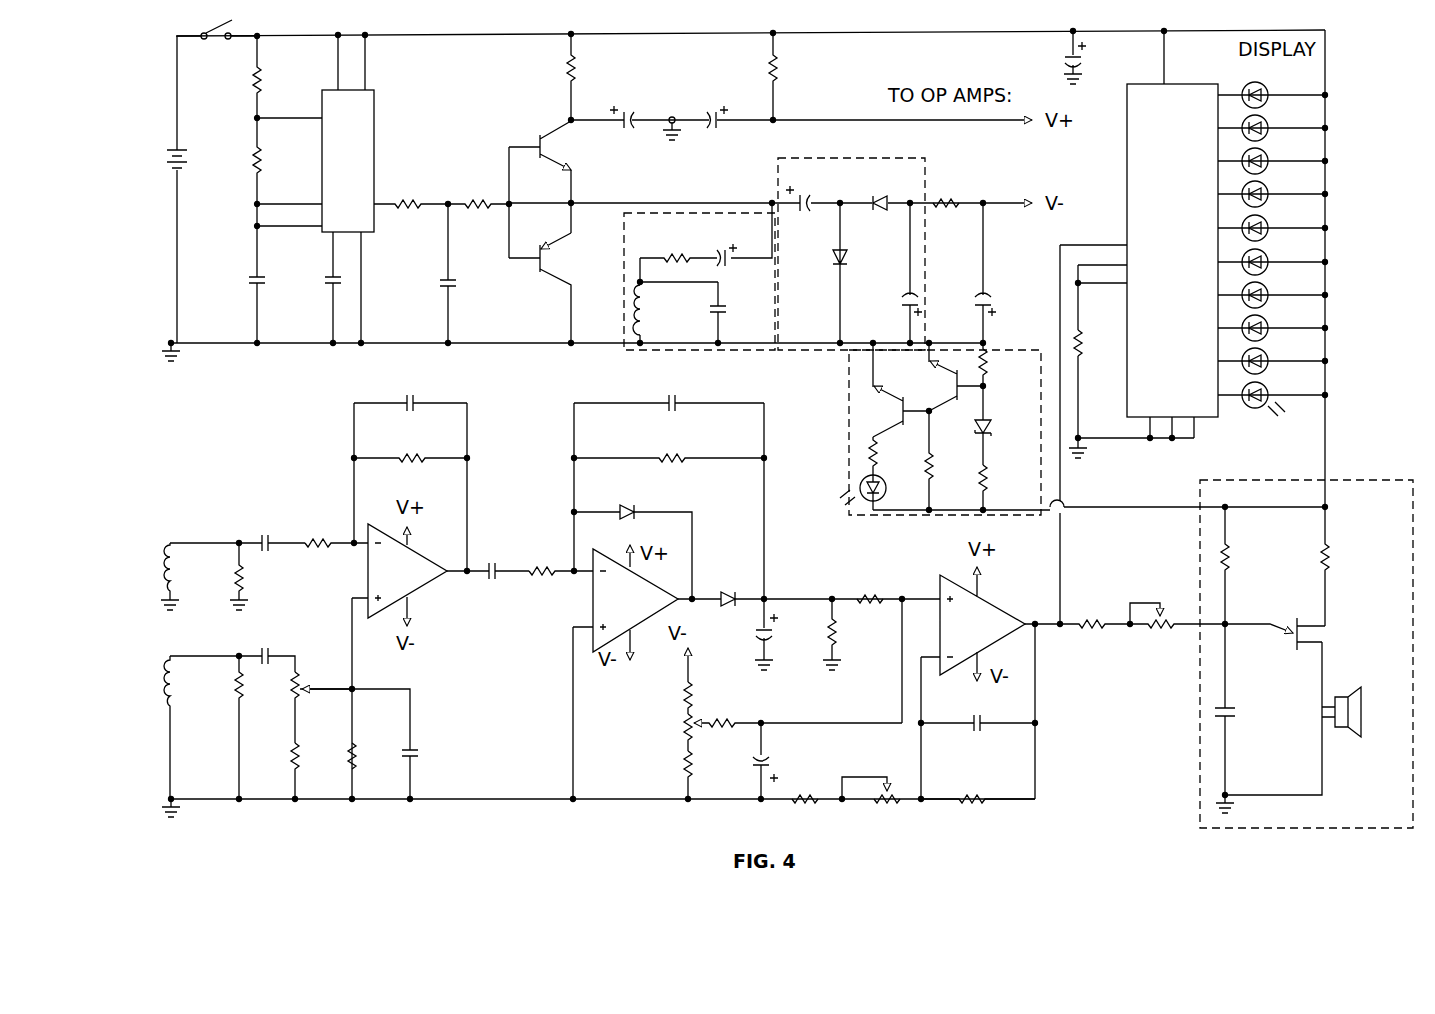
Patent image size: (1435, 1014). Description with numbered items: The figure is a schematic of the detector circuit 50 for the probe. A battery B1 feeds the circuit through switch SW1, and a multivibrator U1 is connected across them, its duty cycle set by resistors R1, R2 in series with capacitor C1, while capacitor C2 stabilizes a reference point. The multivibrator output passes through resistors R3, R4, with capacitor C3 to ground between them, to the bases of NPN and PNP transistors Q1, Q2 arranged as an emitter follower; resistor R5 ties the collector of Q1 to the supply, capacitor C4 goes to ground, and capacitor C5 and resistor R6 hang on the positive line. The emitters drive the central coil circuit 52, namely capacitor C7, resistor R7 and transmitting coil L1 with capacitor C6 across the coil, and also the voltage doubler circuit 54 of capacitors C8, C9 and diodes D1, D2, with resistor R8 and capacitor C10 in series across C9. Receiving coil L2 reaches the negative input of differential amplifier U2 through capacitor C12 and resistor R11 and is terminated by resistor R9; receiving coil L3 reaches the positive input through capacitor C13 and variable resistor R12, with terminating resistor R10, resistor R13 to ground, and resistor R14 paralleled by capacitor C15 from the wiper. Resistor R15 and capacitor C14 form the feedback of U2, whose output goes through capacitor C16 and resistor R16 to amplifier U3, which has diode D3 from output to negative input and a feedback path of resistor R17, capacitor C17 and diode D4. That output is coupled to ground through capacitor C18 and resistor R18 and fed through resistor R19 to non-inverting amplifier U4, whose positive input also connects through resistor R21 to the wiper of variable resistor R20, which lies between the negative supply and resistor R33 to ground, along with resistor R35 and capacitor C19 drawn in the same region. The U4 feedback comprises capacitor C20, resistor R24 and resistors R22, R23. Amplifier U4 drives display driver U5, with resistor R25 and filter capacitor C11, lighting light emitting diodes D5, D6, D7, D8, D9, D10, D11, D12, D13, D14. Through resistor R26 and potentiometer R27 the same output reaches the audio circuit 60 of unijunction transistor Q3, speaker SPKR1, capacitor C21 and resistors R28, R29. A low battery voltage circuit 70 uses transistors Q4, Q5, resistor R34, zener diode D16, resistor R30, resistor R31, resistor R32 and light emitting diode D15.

The switch SW1 is at (217, 43).
The voltage source B1 is at (192, 167).
The resistor R1 is at (272, 77).
The resistor R2 is at (272, 161).
The resistor R3 is at (411, 190).
The resistor R4 is at (478, 190).
The resistor R5 is at (555, 77).
The resistor R6 is at (790, 76).
The resistor R7 is at (678, 244).
The resistor R8 is at (944, 187).
The terminating resistor R9 is at (253, 576).
The terminating resistor R10 is at (259, 727).
The resistor R11 is at (334, 529).
The variable resistor R12 is at (321, 700).
The resistor R13 is at (275, 771).
The resistor R14 is at (332, 756).
The resistor R15 is at (410, 446).
The resistor R16 is at (557, 557).
The resistor R17 is at (669, 446).
The resistor R18 is at (851, 634).
The resistor R19 is at (868, 585).
The variable resistor R20 is at (663, 732).
The resistor R21 is at (727, 710).
The resistor R22 is at (804, 785).
The potentiometer R23 is at (871, 777).
The resistor R24 is at (978, 786).
The resistor R25 is at (1098, 344).
The resistor R26 is at (1095, 606).
The potentiometer R27 is at (1176, 605).
The resistor R28 is at (1247, 565).
The resistor R29 is at (1347, 566).
The resistor R30 is at (1005, 487).
The resistor R31 is at (948, 460).
The resistor R32 is at (893, 456).
The resistor R33 is at (663, 775).
The resistor R34 is at (1004, 364).
The resistor R35 is at (664, 681).
The capacitor C1 is at (240, 283).
The capacitor C2 is at (313, 283).
The capacitor C3 is at (427, 273).
The capacitor C4 is at (623, 105).
The capacitor C5 is at (713, 105).
The capacitor C6 is at (735, 313).
The capacitor C7 is at (719, 246).
The capacitor C8 is at (801, 189).
The capacitor C9 is at (927, 273).
The capacitor C10 is at (1006, 273).
The filter capacitor C11 is at (1096, 57).
The capacitor C12 is at (261, 531).
The capacitor C13 is at (264, 644).
The capacitor C14 is at (410, 391).
The capacitor C15 is at (433, 755).
The capacitor C16 is at (492, 559).
The capacitor C17 is at (669, 391).
The capacitor C18 is at (745, 634).
The capacitor C19 is at (743, 761).
The capacitor C20 is at (963, 711).
The capacitor C21 is at (1199, 718).
The central coil L1 is at (653, 310).
The receiving coil L2 is at (183, 576).
The receiving coil L3 is at (182, 727).
The multivibrator U1 is at (348, 189).
The differential amplifier U2 is at (407, 575).
The amplifier U3 is at (635, 602).
The non-inverting amplifier U4 is at (982, 624).
The display driver U5 is at (1172, 234).
The transistor Q1 is at (553, 162).
The transistor Q2 is at (553, 273).
The unijunction transistor Q3 is at (1293, 634).
The transistor Q4 is at (945, 386).
The transistor Q5 is at (889, 411).
The diode D1 is at (856, 273).
The diode D2 is at (878, 188).
The diode D3 is at (623, 500).
The diode D4 is at (725, 586).
The light emitting diode D5 is at (1271, 90).
The light emitting diode D6 is at (1271, 123).
The light emitting diode D7 is at (1271, 156).
The light emitting diode D8 is at (1271, 189).
The light emitting diode D9 is at (1271, 223).
The light emitting diode D10 is at (1271, 257).
The light emitting diode D11 is at (1271, 290).
The light emitting diode D12 is at (1271, 323).
The light emitting diode D13 is at (1271, 356).
The light emitting diode D14 is at (1271, 394).
The light emitting diode D15 is at (883, 492).
The zener diode D16 is at (1006, 425).
The speaker SPKR1 is at (1359, 698).
The circuit 50 is at (1356, 160).
The central coil circuit 52 is at (697, 213).
The voltage doubler circuit 54 is at (906, 160).
The audio circuit 60 is at (1374, 472).
The low battery voltage circuit 70 is at (848, 447).